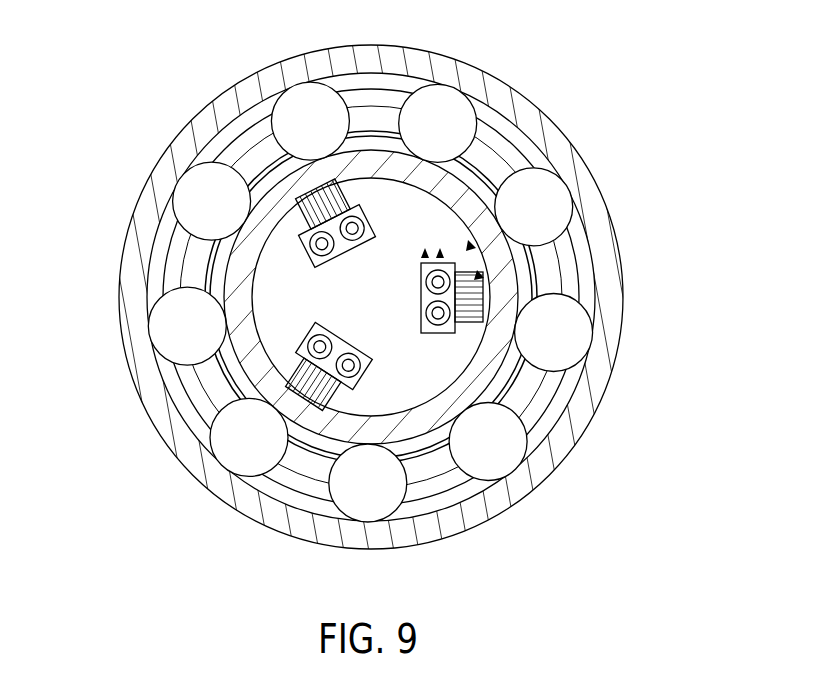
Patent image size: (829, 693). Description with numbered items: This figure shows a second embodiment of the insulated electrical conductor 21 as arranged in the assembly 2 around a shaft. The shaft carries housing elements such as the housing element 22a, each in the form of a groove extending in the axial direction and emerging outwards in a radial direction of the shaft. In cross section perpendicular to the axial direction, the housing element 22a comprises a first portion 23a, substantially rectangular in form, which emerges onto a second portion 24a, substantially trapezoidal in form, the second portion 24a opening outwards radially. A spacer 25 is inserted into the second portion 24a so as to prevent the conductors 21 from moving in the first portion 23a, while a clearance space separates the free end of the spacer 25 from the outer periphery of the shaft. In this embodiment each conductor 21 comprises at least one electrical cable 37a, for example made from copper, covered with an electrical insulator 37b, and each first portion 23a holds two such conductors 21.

The bearing unit 2 is at (214, 76).
The insulated electrical conductor 21 is at (429, 250).
The housing element 22a is at (474, 245).
The first portion 23a is at (444, 250).
The second portion 24a is at (482, 275).
The spacer 25 is at (562, 397).
The electrical cable 37a is at (426, 289).
The electrical insulator 37b is at (425, 318).